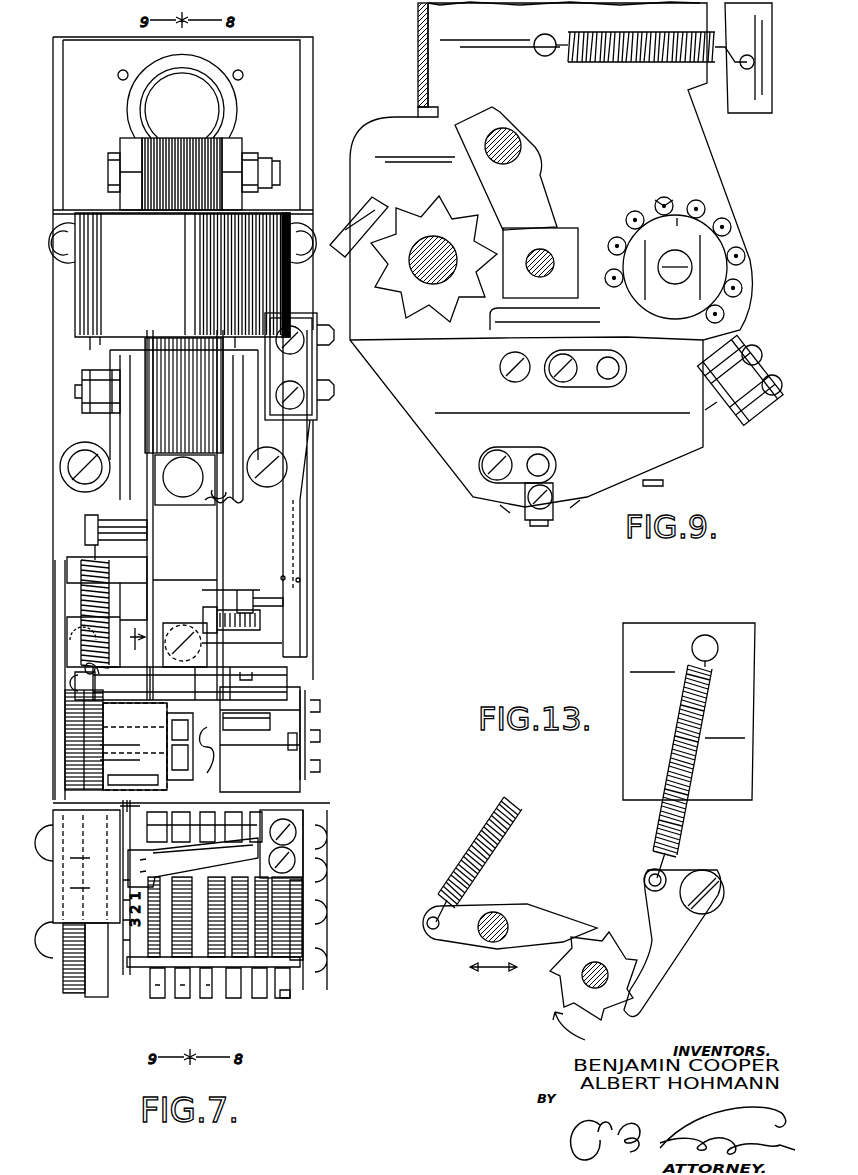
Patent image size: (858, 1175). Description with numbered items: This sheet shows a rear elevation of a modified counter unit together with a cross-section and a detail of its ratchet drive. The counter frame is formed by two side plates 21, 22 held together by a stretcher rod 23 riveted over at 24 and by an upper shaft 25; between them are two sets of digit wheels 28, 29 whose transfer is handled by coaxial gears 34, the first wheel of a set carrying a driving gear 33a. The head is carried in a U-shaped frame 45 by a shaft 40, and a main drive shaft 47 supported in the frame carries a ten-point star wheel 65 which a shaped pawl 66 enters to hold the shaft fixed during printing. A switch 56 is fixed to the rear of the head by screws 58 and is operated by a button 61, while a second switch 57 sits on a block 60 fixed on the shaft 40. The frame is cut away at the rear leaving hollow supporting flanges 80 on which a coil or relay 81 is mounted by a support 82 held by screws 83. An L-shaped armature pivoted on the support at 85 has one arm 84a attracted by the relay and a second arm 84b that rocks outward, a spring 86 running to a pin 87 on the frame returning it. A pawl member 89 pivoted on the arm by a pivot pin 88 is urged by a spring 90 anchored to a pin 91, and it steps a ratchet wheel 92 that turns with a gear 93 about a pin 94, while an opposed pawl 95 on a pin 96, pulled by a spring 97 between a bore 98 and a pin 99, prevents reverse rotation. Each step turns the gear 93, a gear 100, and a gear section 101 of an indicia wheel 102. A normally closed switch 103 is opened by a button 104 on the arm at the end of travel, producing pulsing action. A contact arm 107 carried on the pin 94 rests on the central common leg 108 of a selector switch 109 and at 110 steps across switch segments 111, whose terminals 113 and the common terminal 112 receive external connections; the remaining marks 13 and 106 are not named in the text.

In FIG. 7, the section line / detent 13 is at (160, 725).
In FIG. 7, the side plate 21 is at (305, 980).
In FIG. 7, the side plate 22 is at (127, 980).
In FIG. 9, the side plate 22 is at (528, 190).
In FIG. 7, the stretcher rod 23 is at (283, 960).
In FIG. 7, the riveted end 24 is at (300, 965).
In FIG. 9, the shaft 25 is at (522, 147).
In FIG. 7, the counter digit wheels 28 is at (297, 925).
In FIG. 9, the counter digit wheels 28 is at (672, 480).
In FIG. 7, the counter digit wheels 29 is at (160, 1000).
In FIG. 9, the counter digit wheels 29 is at (562, 518).
In FIG. 7, the driving gear 33a is at (283, 998).
In FIG. 7, the coaxial gears 34 is at (232, 1000).
In FIG. 9, the shaft 40 is at (545, 258).
In FIG. 9, the frame 45 is at (448, 470).
In FIG. 9, the main drive shaft 47 is at (437, 250).
In FIG. 7, the switch 56 is at (193, 862).
In FIG. 9, the switch 56 is at (740, 418).
In FIG. 9, the switch 57 is at (488, 325).
In FIG. 7, the screws 58 is at (300, 830).
In FIG. 9, the screws 58 is at (758, 362).
In FIG. 9, the block 60 is at (570, 242).
In FIG. 9, the button 61 is at (718, 430).
In FIG. 9, the star wheel 65 is at (412, 320).
In FIG. 9, the pawl 66 is at (340, 230).
In FIG. 7, the supporting flanges 80 is at (62, 414).
In FIG. 9, the supporting flanges 80 is at (418, 70).
In FIG. 13, the supporting flanges 80 is at (745, 715).
In FIG. 7, the coil or relay 81 is at (82, 300).
In FIG. 7, the support 82 is at (142, 140).
In FIG. 9, the support 82 is at (772, 45).
In FIG. 7, the screws 83 is at (60, 240).
In FIG. 7, the armature arm 84a is at (185, 487).
In FIG. 7, the armature arm 84b is at (185, 623).
In FIG. 7, the pivot 85 is at (76, 389).
In FIG. 7, the spring 86 is at (212, 525).
In FIG. 9, the spring 86 is at (628, 62).
In FIG. 9, the pin 87 is at (538, 53).
In FIG. 7, the pivot pin 88 is at (75, 678).
In FIG. 13, the pivot pin 88 is at (505, 920).
In FIG. 7, the pawl member 89 is at (78, 687).
In FIG. 13, the pawl member 89 is at (460, 940).
In FIG. 7, the spring 90 is at (80, 597).
In FIG. 13, the spring 90 is at (472, 830).
In FIG. 7, the pin 91 is at (84, 527).
In FIG. 7, the ratchet wheel 92 is at (104, 760).
In FIG. 13, the ratchet wheel 92 is at (600, 945).
In FIG. 7, the gear 93 is at (70, 770).
In FIG. 7, the pin 94 is at (135, 746).
In FIG. 13, the pin 94 is at (607, 970).
In FIG. 13, the opposed pawl 95 is at (693, 948).
In FIG. 13, the pin 96 is at (724, 885).
In FIG. 13, the spring 97 is at (678, 738).
In FIG. 13, the bore 98 is at (650, 874).
In FIG. 13, the pin 99 is at (704, 636).
In FIG. 7, the gear 100 is at (60, 812).
In FIG. 7, the gear section 101 is at (72, 992).
In FIG. 7, the indicia wheel 102 is at (92, 998).
In FIG. 7, the switch 103 is at (300, 510).
In FIG. 7, the button 104 is at (242, 624).
In FIG. 7, the plate 106 is at (133, 775).
In FIG. 7, the contact arm 107 is at (215, 760).
In FIG. 7, the central common leg 108 is at (207, 738).
In FIG. 9, the central common leg 108 is at (665, 270).
In FIG. 7, the selector switch 109 is at (292, 716).
In FIG. 9, the selector switch 109 is at (708, 240).
In FIG. 7, the contact point 110 is at (254, 672).
In FIG. 7, the switch segments 111 is at (260, 712).
In FIG. 9, the switch segments 111 is at (680, 223).
In FIG. 7, the common terminal 112 is at (298, 741).
In FIG. 7, the terminals 113 is at (262, 785).
In FIG. 9, the terminals 113 is at (640, 205).